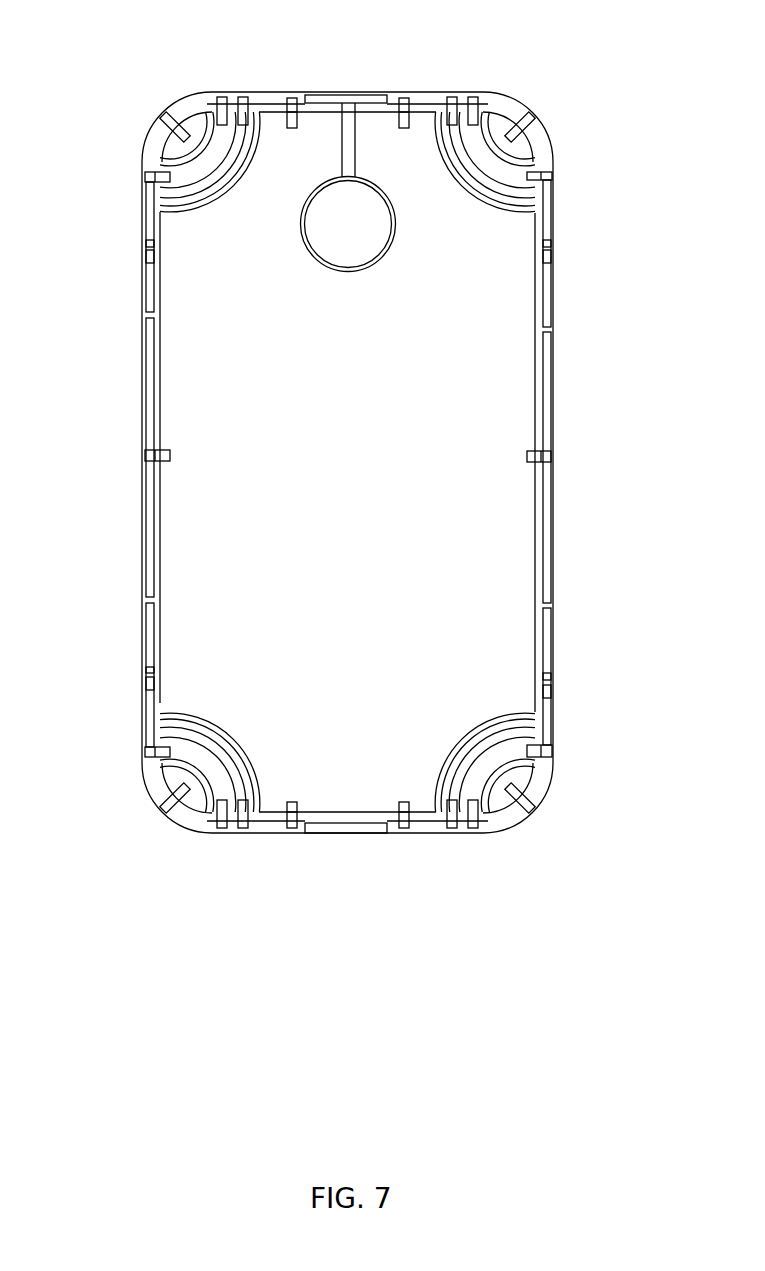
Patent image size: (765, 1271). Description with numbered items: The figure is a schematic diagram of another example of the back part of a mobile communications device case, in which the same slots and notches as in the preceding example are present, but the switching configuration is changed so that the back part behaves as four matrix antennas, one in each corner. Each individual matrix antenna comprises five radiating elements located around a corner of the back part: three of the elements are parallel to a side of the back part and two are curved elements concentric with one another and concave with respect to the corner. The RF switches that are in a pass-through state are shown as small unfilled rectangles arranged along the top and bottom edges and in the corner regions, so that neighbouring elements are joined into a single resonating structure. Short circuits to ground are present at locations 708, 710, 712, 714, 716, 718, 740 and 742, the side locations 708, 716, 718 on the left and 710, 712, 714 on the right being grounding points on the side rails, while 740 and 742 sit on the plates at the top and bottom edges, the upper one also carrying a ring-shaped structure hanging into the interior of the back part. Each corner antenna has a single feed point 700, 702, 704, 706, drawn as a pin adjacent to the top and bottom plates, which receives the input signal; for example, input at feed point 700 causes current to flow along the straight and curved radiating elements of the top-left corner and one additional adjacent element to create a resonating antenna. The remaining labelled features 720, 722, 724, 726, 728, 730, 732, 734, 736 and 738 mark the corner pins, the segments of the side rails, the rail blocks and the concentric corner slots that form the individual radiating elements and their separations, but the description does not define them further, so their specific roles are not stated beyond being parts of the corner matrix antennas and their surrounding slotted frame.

The feed point 700 is at (290, 97).
The feed point 702 is at (404, 97).
The feed point 704 is at (292, 832).
The feed point 706 is at (404, 832).
The short circuit to ground 708 is at (146, 171).
The short circuit to ground 710 is at (554, 136).
The short circuit to ground 712 is at (552, 456).
The short circuit to ground 714 is at (554, 782).
The short circuit to ground 716 is at (146, 762).
The short circuit to ground 718 is at (145, 456).
The side rail 720 is at (148, 449).
The corner pin 722 is at (168, 120).
The corner pin 724 is at (518, 118).
The side rail segment 726 is at (549, 450).
The corner slot 728 is at (548, 816).
The contact pin 730 is at (475, 836).
The corner slots 732 is at (490, 745).
The side tab 734 is at (553, 757).
The rail blocks 736 is at (554, 704).
The side rail segment 738 is at (554, 639).
The short circuit to ground 740 is at (345, 95).
The short circuit to ground 742 is at (347, 834).